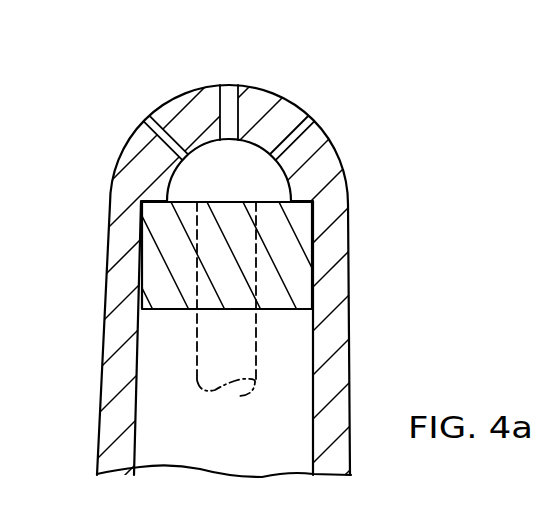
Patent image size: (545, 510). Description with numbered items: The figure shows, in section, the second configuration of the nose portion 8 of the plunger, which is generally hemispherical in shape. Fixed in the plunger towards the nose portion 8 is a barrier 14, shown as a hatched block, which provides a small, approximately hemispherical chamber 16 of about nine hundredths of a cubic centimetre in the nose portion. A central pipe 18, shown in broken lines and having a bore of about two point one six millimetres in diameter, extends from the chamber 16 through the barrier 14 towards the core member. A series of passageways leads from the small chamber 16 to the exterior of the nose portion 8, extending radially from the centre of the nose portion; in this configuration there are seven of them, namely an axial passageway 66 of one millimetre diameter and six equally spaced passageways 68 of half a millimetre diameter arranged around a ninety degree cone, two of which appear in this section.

The nose portion 8 is at (328, 334).
The barrier 14 is at (290, 242).
The chamber 16 is at (185, 170).
The central pipe 18 is at (205, 345).
The axial passageway 66 is at (240, 92).
The passageways 68 is at (150, 128).